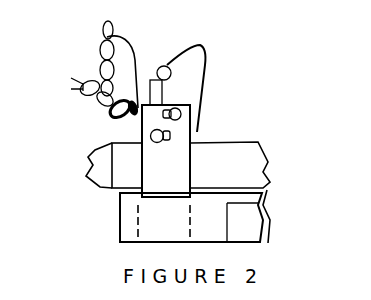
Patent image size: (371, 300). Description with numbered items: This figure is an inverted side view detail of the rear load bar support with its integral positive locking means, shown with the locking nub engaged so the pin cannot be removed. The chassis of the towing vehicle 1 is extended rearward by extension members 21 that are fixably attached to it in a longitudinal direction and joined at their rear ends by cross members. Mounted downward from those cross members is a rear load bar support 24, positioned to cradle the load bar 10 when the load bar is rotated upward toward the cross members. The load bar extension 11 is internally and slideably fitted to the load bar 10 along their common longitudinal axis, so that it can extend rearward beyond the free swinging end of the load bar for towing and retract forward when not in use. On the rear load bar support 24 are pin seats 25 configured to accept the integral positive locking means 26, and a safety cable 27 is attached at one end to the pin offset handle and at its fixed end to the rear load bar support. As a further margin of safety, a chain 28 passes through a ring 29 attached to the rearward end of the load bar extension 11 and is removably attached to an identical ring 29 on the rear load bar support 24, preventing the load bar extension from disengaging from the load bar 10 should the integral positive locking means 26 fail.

The towing vehicle chassis 1 is at (268, 213).
The load bar 10 is at (258, 141).
The load bar extension 11 is at (100, 188).
The extension member 21 is at (120, 220).
The rear load bar support 24 is at (152, 165).
The pin seat 25 is at (186, 120).
The integral positive locking means 26 is at (155, 93).
The safety cable 27 is at (208, 55).
The chain 28 is at (88, 98).
The ring 29 is at (103, 37).